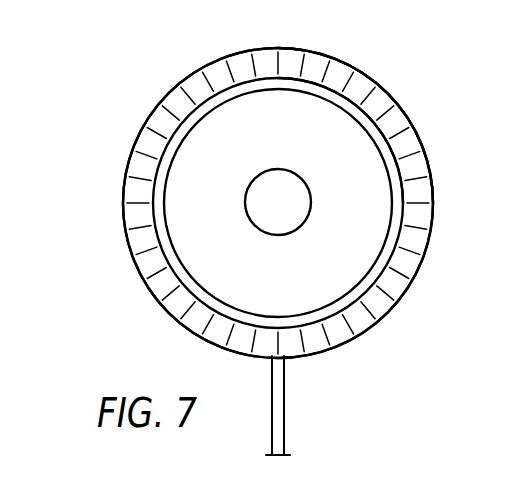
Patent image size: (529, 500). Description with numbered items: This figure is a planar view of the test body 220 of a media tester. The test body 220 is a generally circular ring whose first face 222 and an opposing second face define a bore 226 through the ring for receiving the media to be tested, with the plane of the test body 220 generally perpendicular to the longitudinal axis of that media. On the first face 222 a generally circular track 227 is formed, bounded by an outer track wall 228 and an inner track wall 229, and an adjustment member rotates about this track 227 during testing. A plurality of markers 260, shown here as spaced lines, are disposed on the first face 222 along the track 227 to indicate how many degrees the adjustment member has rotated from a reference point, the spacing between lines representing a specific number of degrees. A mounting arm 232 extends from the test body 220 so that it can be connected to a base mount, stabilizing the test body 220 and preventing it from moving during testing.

The test body 220 is at (196, 58).
The first face 222 is at (168, 292).
The bore 226 is at (300, 203).
The track 227 is at (391, 165).
The outer track wall 228 is at (362, 100).
The inner track wall 229 is at (338, 100).
The mounting arm 232 is at (295, 413).
The markers 260 is at (140, 197).